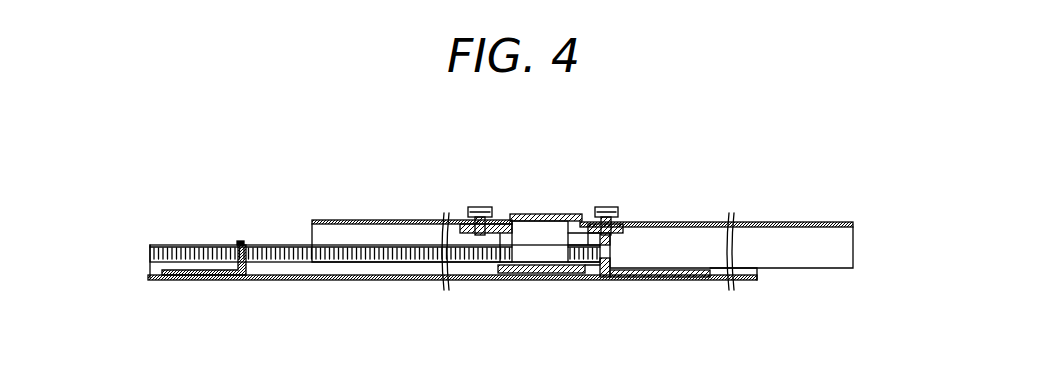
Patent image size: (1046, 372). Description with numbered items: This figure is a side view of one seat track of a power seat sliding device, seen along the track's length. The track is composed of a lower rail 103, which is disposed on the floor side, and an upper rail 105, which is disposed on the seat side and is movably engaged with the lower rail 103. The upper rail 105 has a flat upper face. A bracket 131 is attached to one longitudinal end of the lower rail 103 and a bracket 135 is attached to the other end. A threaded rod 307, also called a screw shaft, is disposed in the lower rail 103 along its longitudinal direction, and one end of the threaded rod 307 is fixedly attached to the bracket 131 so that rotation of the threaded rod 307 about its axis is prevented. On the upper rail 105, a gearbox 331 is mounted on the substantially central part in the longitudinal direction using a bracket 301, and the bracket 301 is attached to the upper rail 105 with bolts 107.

The lower rail 103 is at (337, 281).
The upper rail 105 is at (345, 220).
The bolts 107 is at (483, 207).
The bracket 131 is at (204, 282).
The bracket 135 is at (653, 281).
The bracket 301 is at (519, 273).
The threaded rod 307 is at (358, 281).
The gearbox 331 is at (538, 229).